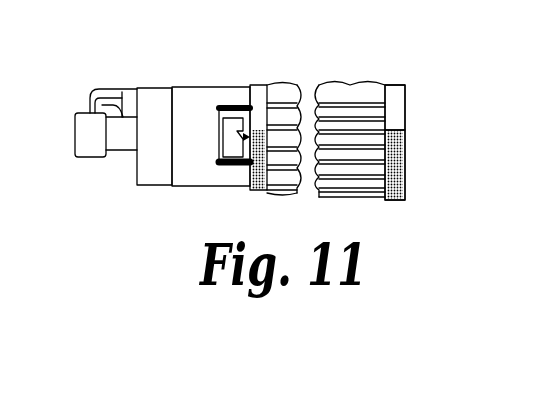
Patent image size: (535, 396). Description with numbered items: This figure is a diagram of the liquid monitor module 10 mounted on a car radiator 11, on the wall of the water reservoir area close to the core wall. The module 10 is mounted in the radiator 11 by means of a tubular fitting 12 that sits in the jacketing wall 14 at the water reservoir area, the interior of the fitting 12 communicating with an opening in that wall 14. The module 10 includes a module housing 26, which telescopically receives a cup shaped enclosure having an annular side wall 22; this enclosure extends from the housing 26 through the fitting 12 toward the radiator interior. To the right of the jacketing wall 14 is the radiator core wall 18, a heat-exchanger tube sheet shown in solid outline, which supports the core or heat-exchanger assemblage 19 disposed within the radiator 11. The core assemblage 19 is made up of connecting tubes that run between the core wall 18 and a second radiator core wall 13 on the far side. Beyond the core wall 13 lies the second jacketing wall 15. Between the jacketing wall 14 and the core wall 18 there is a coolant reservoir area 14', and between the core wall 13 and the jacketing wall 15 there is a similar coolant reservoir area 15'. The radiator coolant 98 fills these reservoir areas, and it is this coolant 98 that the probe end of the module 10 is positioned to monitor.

The module 10 is at (75, 84).
The module housing 26 is at (157, 115).
The tubular fitting 12 is at (197, 100).
The jacketing wall 14 is at (232, 113).
The coolant reservoir area 14' is at (267, 106).
The radiator 11 is at (322, 72).
The core assemblage 19 is at (350, 103).
The radiator core wall 13 is at (395, 86).
The coolant reservoir area 15' is at (426, 100).
The jacketing wall 15 is at (421, 163).
The annular side wall 22 is at (226, 170).
The radiator coolant 98 is at (260, 191).
The radiator core wall 18 is at (286, 192).